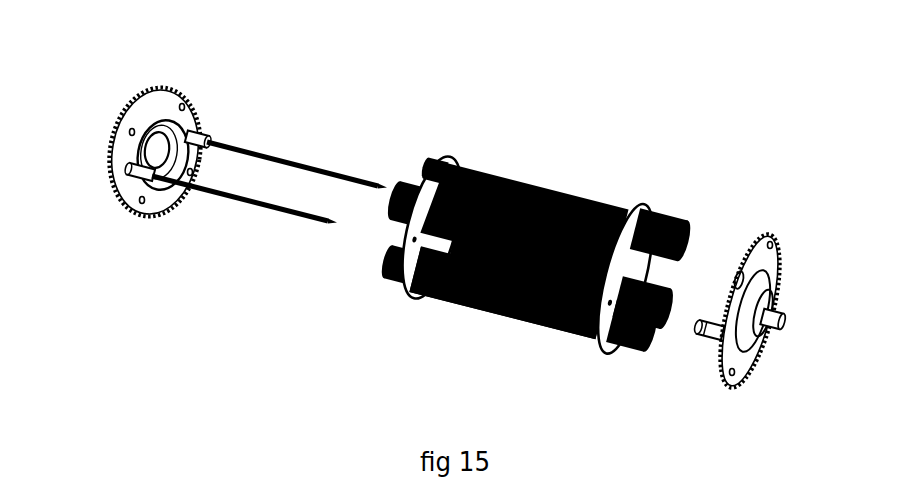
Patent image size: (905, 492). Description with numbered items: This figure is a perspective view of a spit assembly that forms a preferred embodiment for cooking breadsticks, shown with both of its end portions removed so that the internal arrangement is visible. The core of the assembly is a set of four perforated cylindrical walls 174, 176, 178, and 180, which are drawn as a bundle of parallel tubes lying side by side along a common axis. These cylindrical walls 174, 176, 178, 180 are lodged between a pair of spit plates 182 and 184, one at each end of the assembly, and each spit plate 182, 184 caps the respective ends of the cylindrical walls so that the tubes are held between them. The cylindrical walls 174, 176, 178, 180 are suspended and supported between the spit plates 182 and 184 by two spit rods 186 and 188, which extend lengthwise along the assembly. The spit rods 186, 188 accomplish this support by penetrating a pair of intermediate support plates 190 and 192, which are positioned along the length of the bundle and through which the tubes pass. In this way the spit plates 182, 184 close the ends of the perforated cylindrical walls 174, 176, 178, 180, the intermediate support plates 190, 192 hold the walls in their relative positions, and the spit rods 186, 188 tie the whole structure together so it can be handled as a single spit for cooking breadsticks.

The perforated cylindrical wall 174 is at (523, 180).
The perforated cylindrical wall 176 is at (400, 187).
The perforated cylindrical wall 178 is at (390, 270).
The perforated cylindrical wall 180 is at (661, 320).
The spit plate 182 is at (762, 235).
The spit plate 184 is at (161, 109).
The spit rod 186 is at (285, 158).
The spit rod 188 is at (318, 215).
The intermediate support plate 190 is at (402, 282).
The intermediate support plate 192 is at (577, 338).